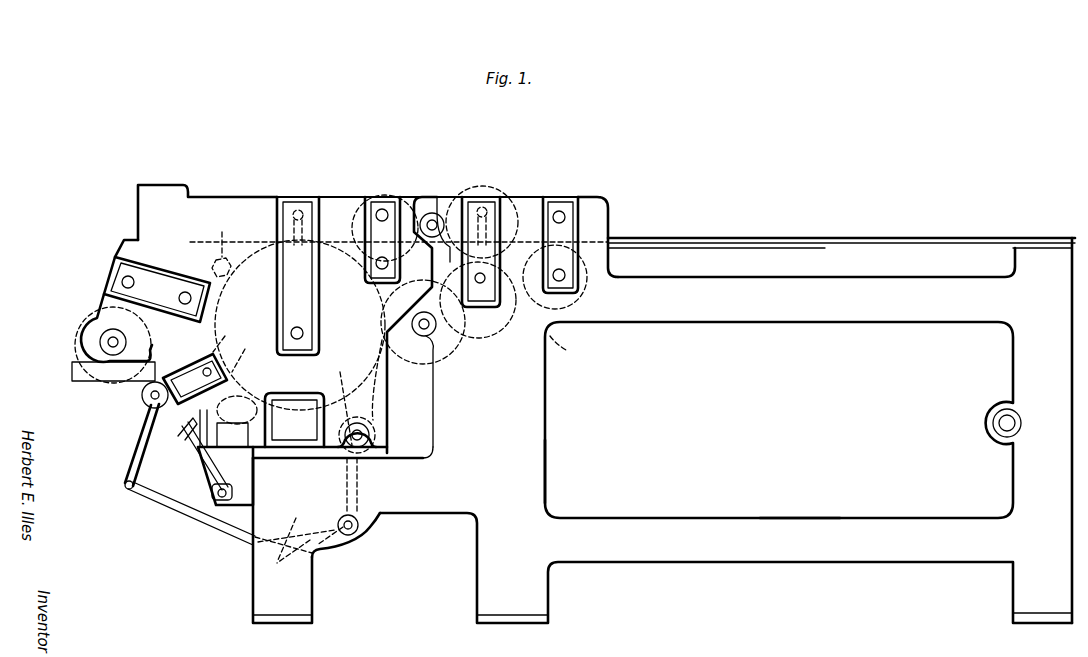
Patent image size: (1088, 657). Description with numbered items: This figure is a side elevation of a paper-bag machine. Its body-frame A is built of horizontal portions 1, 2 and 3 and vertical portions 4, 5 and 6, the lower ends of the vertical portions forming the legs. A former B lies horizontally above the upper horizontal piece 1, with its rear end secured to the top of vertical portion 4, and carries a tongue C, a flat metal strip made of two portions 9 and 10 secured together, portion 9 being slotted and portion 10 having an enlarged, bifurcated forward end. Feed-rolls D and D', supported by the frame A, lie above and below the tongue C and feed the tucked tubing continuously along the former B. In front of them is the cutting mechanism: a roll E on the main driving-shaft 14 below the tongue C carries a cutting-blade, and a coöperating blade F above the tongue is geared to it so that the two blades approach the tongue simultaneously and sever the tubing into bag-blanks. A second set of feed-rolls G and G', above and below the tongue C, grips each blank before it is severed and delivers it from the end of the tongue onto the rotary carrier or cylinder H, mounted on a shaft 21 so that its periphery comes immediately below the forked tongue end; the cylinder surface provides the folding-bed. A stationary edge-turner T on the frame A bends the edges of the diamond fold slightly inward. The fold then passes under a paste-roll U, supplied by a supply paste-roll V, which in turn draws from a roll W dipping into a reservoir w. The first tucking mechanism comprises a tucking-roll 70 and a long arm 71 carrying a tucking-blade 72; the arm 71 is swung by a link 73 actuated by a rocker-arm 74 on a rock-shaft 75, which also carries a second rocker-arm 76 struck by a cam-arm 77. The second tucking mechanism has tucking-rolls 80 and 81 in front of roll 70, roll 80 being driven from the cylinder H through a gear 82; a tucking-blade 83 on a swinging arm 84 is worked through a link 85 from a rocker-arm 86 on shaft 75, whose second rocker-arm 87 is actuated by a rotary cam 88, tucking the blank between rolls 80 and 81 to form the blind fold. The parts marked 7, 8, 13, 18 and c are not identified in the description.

The horizontal portion 1 is at (776, 322).
The horizontal portion 2 is at (800, 518).
The horizontal portion 3 is at (422, 508).
The vertical portion 4 is at (1023, 359).
The vertical portion 5 is at (540, 481).
The vertical portion 6 is at (265, 575).
The slot 7 is at (893, 248).
The guide rail 8 is at (999, 239).
The tongue portion 9 is at (606, 216).
The tongue section 10 is at (335, 247).
The plate 13 is at (686, 248).
The main driving-shaft 14 is at (483, 283).
The roller 18 is at (388, 432).
The shaft 21 is at (303, 330).
The tucking-roll 70 is at (244, 352).
The long arm 71 is at (140, 431).
The tucking-blade 72 is at (222, 336).
The link 73 is at (192, 512).
The rocker-arm 74 is at (340, 552).
The rock-shaft 75 is at (358, 528).
The second rocker-arm 76 is at (360, 486).
The cam-arm 77 is at (355, 392).
The tucking-roll 80 is at (248, 396).
The tucking-roll 81 is at (225, 476).
The gear 82 is at (294, 410).
The tucking-blade 83 is at (178, 429).
The swinging arm 84 is at (192, 463).
The link 85 is at (283, 531).
The rocker-arm 86 is at (300, 529).
The second rocker-arm 87 is at (346, 491).
The rotary cam 88 is at (392, 397).
The body-frame A is at (535, 406).
The former B is at (928, 238).
The tongue C is at (543, 197).
The feed-roll D is at (574, 226).
The feed-roll D' is at (581, 297).
The roll E is at (565, 347).
The coöperating blade F is at (497, 198).
The feed-roll G is at (385, 206).
The feed-roll G' is at (423, 288).
The rotary carrier or cylinder H is at (406, 371).
The stationary edge-turner T is at (219, 247).
The paste-roll U is at (182, 300).
The supply paste-roll V is at (108, 263).
The roll W is at (96, 330).
The reservoir w is at (72, 372).
The bracket c is at (470, 198).